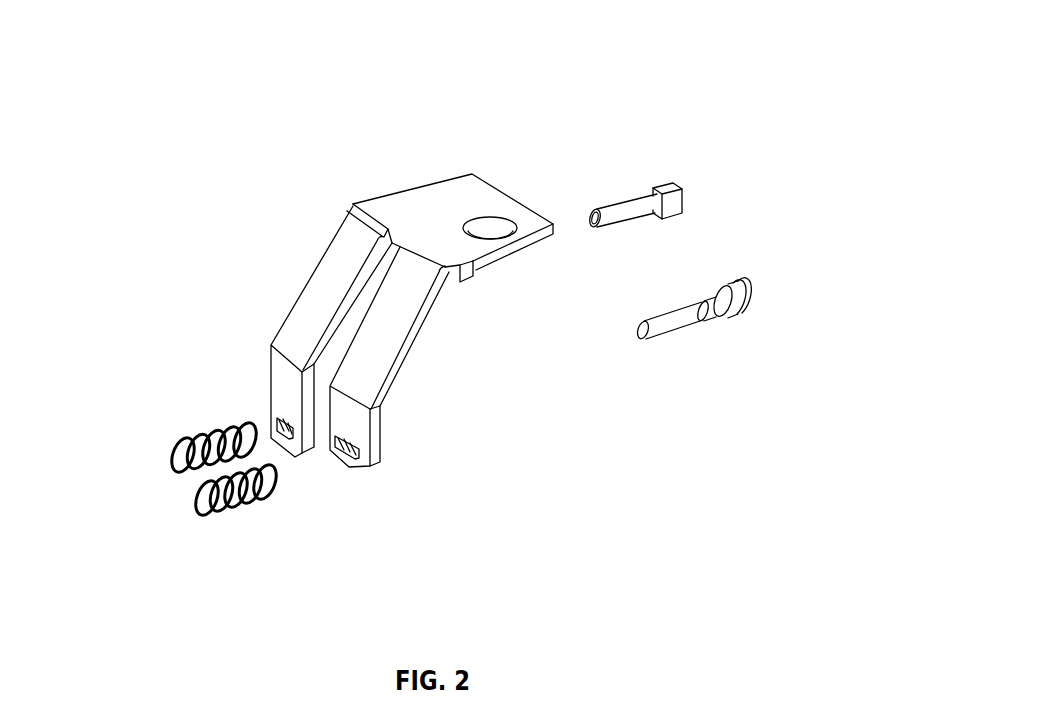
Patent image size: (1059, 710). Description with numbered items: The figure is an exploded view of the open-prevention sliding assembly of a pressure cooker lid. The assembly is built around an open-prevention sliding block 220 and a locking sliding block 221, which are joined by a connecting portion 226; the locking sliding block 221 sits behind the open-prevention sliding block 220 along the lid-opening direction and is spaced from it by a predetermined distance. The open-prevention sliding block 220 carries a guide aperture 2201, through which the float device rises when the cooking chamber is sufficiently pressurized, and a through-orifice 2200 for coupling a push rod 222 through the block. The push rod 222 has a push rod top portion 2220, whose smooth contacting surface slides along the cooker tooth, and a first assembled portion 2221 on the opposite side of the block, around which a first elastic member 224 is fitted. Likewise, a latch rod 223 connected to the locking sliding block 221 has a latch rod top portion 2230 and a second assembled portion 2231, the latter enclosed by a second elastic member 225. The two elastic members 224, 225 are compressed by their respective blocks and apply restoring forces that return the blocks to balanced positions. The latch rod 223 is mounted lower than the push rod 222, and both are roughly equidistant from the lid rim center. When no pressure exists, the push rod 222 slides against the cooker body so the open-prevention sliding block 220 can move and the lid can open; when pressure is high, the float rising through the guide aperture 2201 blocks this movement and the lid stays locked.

The open-prevention sliding block 220 is at (358, 326).
The locking sliding block 221 is at (311, 305).
The connecting portion 226 is at (407, 223).
The guide aperture 2201 is at (491, 233).
The through-orifice 2200 is at (362, 455).
The second elastic member 225 is at (215, 434).
The first elastic member 224 is at (238, 501).
The latch rod 223 is at (652, 132).
The latch rod top portion 2230 is at (670, 180).
The second assembled portion 2231 is at (626, 207).
The push rod 222 is at (774, 333).
The push rod top portion 2220 is at (727, 302).
The first assembled portion 2221 is at (668, 331).